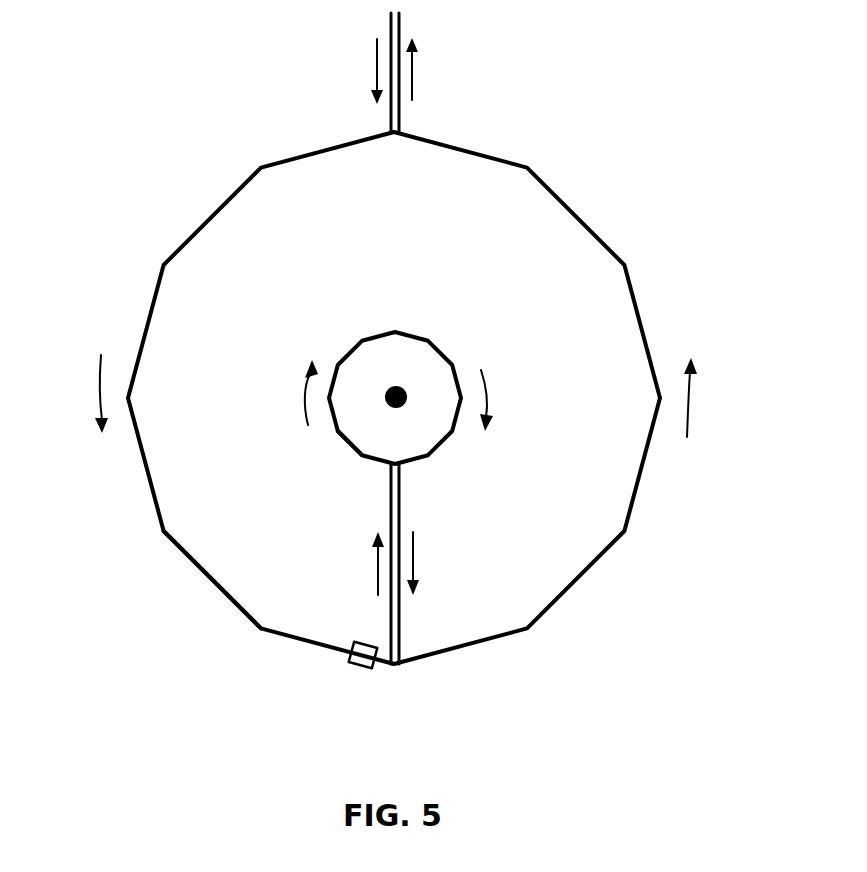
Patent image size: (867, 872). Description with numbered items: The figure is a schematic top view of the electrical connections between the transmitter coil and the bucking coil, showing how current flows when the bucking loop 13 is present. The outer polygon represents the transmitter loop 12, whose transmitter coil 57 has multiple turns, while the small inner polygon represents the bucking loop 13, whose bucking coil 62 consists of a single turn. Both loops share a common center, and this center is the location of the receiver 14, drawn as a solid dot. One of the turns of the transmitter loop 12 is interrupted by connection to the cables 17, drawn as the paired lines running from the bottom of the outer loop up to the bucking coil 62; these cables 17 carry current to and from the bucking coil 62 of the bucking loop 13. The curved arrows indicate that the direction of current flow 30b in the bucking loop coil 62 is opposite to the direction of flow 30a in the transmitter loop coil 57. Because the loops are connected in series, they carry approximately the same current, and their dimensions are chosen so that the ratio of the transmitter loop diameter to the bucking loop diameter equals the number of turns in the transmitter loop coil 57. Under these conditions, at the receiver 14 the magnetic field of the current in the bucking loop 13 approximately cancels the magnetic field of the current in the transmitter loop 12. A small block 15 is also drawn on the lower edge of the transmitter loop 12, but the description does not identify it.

The transmitter loop 12 is at (643, 470).
The bucking loop 13 is at (440, 351).
The receiver 14 is at (397, 388).
The sensor block 15 is at (353, 667).
The cables 17 is at (401, 497).
The direction of current flow in the transmitter loop coil 30a is at (100, 385).
The direction of current flow in the bucking loop coil 30b is at (305, 401).
The transmitter coil 57 is at (207, 578).
The bucking coil 62 is at (340, 436).